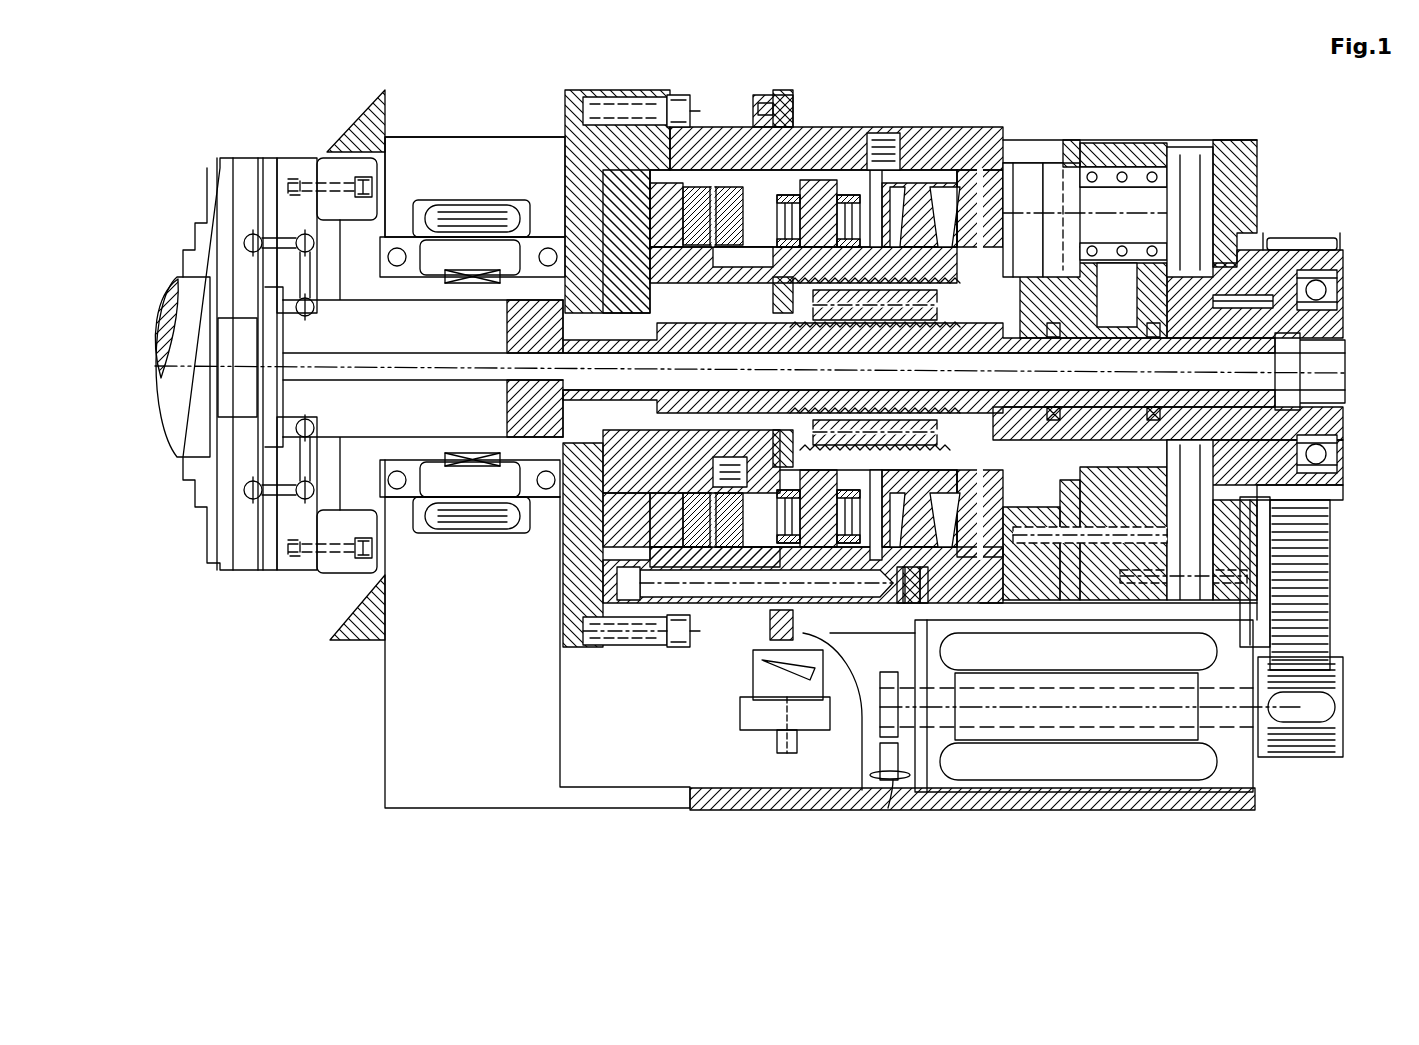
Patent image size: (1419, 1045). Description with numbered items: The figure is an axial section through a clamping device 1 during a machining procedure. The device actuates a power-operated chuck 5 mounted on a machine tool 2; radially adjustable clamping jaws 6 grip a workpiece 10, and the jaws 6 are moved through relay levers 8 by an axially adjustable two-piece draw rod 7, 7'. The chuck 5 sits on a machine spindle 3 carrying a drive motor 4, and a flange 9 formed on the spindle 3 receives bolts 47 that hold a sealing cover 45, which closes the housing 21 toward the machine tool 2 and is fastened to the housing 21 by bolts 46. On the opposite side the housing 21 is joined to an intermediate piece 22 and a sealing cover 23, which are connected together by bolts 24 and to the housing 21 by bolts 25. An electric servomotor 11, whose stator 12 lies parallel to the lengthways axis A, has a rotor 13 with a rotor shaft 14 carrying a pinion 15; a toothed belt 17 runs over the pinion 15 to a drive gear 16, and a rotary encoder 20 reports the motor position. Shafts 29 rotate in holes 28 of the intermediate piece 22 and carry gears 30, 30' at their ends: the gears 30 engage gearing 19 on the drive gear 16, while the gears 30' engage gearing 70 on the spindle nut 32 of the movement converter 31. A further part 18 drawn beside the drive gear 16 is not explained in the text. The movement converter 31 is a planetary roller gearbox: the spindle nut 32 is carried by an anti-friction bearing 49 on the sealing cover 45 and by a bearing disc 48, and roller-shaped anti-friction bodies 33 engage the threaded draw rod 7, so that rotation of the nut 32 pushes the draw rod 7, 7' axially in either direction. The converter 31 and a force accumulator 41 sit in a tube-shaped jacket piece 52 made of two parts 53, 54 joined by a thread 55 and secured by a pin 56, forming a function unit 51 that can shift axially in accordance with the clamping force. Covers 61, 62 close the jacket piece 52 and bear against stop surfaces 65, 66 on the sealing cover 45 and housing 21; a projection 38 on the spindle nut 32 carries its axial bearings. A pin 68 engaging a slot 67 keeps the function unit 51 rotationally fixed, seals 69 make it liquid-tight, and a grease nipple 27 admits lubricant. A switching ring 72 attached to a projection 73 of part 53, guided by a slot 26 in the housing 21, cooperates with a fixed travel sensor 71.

The clamping device 1 is at (264, 729).
The machine tool 2 is at (426, 134).
The machine spindle 3 is at (390, 447).
The drive motor 4 is at (422, 531).
The power-operated chuck 5 is at (278, 162).
The clamping jaws 6 is at (199, 535).
The draw rod 7 is at (804, 526).
The draw rod 7' is at (285, 448).
The relay levers 8 is at (270, 502).
The flange 9 is at (605, 160).
The workpiece 10 is at (157, 437).
The electric servomotor 11 is at (1228, 803).
The stator 12 is at (1110, 760).
The rotor 13 is at (1082, 733).
The rotor shaft 14 is at (1220, 736).
The pinion 15 is at (1342, 739).
The drive gear 16 is at (1317, 497).
The toothed belt 17 is at (1297, 597).
The bearing sleeve 18 is at (1297, 503).
The gearing 19 is at (1237, 500).
The rotary encoder 20 is at (902, 782).
The housing 21 is at (948, 135).
The intermediate piece 22 is at (1102, 150).
The sealing cover 23 is at (1240, 200).
The bolts 24 is at (1247, 587).
The bolts 25 is at (1167, 537).
The slot 26 is at (792, 130).
The grease nipple 27 is at (895, 140).
The holes 28 is at (1130, 173).
The shafts 29 is at (1065, 178).
The gears 30 is at (1190, 181).
The gears 30' is at (1022, 185).
The movement converter 31 is at (725, 585).
The spindle nut 32 is at (922, 150).
The anti-friction bodies 33 is at (967, 600).
The projection 38 is at (800, 560).
The force accumulator 41 is at (659, 206).
The sealing cover 45 is at (625, 487).
The bolts 46 is at (777, 545).
The bolts 47 is at (680, 128).
The bearing disc 48 is at (1250, 420).
The anti-friction bearing 49 is at (655, 640).
The function unit 51 is at (705, 63).
The jacket piece 52 is at (715, 135).
The part 53 is at (740, 140).
The part 54 is at (975, 140).
The thread 55 is at (862, 133).
The pin 56 is at (822, 165).
The cover 61 is at (650, 520).
The cover 62 is at (1000, 130).
The stop surface 65 is at (603, 605).
The stop surface 66 is at (1012, 600).
The slot 67 is at (897, 572).
The pin 68 is at (912, 600).
The seals 69 is at (700, 590).
The gearing 70 is at (1020, 600).
The travel sensor 71 is at (831, 689).
The switching ring 72 is at (920, 613).
The projection 73 is at (778, 128).
The lengthways axis A is at (1248, 365).